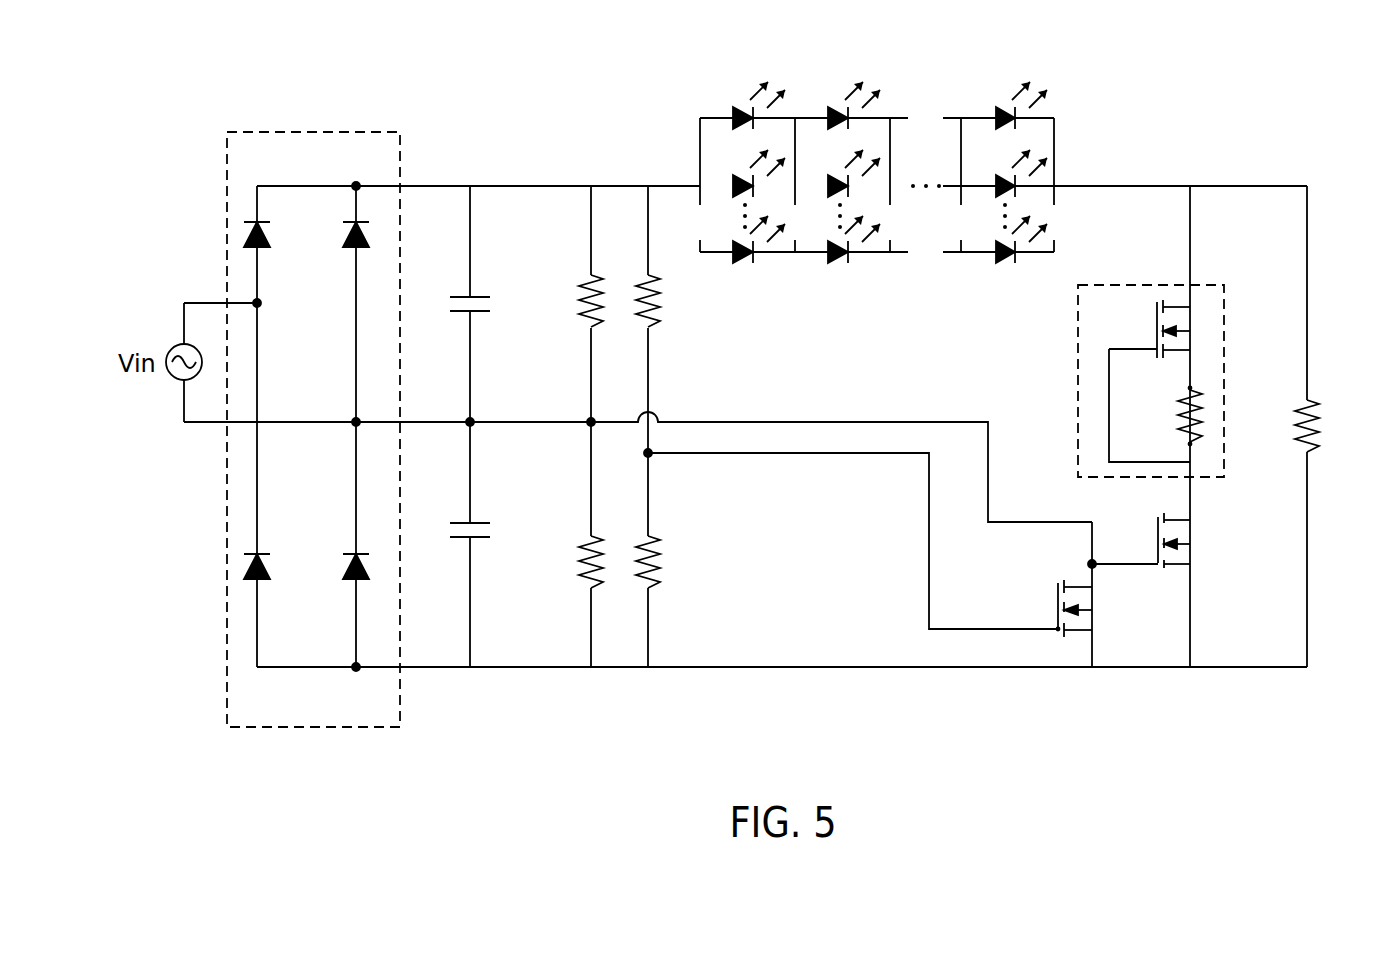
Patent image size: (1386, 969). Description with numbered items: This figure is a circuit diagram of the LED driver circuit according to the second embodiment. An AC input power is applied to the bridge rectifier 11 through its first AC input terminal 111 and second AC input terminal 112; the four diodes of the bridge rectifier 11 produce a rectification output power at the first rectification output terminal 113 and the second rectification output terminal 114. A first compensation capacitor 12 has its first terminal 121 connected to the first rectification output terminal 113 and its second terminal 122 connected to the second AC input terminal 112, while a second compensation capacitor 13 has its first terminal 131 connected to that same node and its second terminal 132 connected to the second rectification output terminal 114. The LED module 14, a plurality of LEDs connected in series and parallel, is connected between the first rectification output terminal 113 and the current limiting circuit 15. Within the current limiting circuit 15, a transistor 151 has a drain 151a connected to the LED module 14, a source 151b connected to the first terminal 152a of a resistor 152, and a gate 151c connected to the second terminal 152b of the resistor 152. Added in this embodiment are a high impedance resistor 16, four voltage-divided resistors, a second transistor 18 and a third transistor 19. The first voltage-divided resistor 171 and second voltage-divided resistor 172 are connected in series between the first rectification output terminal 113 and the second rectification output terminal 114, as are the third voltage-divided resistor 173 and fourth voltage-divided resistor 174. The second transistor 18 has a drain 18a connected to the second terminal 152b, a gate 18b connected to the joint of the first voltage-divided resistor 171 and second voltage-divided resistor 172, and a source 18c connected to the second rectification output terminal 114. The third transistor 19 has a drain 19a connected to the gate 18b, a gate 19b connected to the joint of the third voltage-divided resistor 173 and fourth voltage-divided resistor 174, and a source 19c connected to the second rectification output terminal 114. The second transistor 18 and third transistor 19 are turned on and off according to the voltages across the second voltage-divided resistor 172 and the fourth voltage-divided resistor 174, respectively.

The bridge rectifier 11 is at (318, 131).
The first AC input terminal 111 is at (255, 301).
The second AC input terminal 112 is at (354, 420).
The first rectification output terminal 113 is at (358, 184).
The second rectification output terminal 114 is at (358, 669).
The first compensation capacitor 12 is at (503, 304).
The first terminal of the first compensation capacitor 121 is at (480, 296).
The second terminal of the first compensation capacitor 122 is at (480, 312).
The second compensation capacitor 13 is at (503, 544).
The first terminal of the second compensation capacitor 131 is at (480, 522).
The second terminal of the second compensation capacitor 132 is at (480, 538).
The LED module 14 is at (1045, 130).
The current limiting circuit 15 is at (1193, 365).
The transistor 151 is at (1183, 353).
The drain 151a is at (1188, 305).
The source 151b is at (1188, 354).
The gate 151c is at (1155, 348).
The resistor 152 is at (1243, 417).
The first terminal of the resistor 152a is at (1195, 385).
The second terminal of the resistor 152b is at (1195, 452).
The high impedance resistor 16 is at (1312, 430).
The first voltage-divided resistor 171 is at (578, 318).
The second voltage-divided resistor 172 is at (578, 577).
The third voltage-divided resistor 173 is at (661, 318).
The fourth voltage-divided resistor 174 is at (661, 578).
The second transistor 18 is at (1169, 540).
The drain 18a is at (1188, 518).
The gate 18b is at (1156, 561).
The source 18c is at (1160, 582).
The third transistor 19 is at (1070, 603).
The drain 19a is at (1090, 585).
The gate 19b is at (1056, 629).
The source 19c is at (1094, 648).